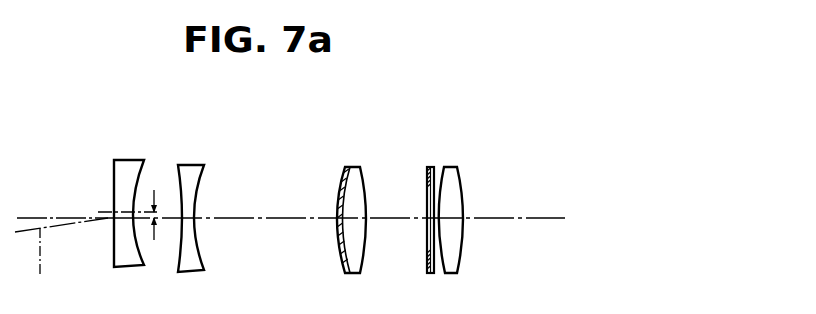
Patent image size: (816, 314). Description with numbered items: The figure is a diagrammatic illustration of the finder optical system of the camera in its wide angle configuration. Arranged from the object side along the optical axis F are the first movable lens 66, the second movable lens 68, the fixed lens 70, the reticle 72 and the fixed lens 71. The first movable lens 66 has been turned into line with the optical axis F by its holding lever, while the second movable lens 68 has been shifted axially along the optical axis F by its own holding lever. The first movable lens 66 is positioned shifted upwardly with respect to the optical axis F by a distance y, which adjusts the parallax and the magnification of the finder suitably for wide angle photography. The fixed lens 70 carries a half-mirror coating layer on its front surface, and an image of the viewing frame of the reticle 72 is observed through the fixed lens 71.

The first movable lens 66 is at (129, 160).
The second movable lens 68 is at (193, 164).
The fixed lens 70 is at (352, 167).
The reticle 72 is at (431, 167).
The fixed lens 71 is at (453, 167).
The optical axis F is at (38, 261).
The distance y is at (155, 217).